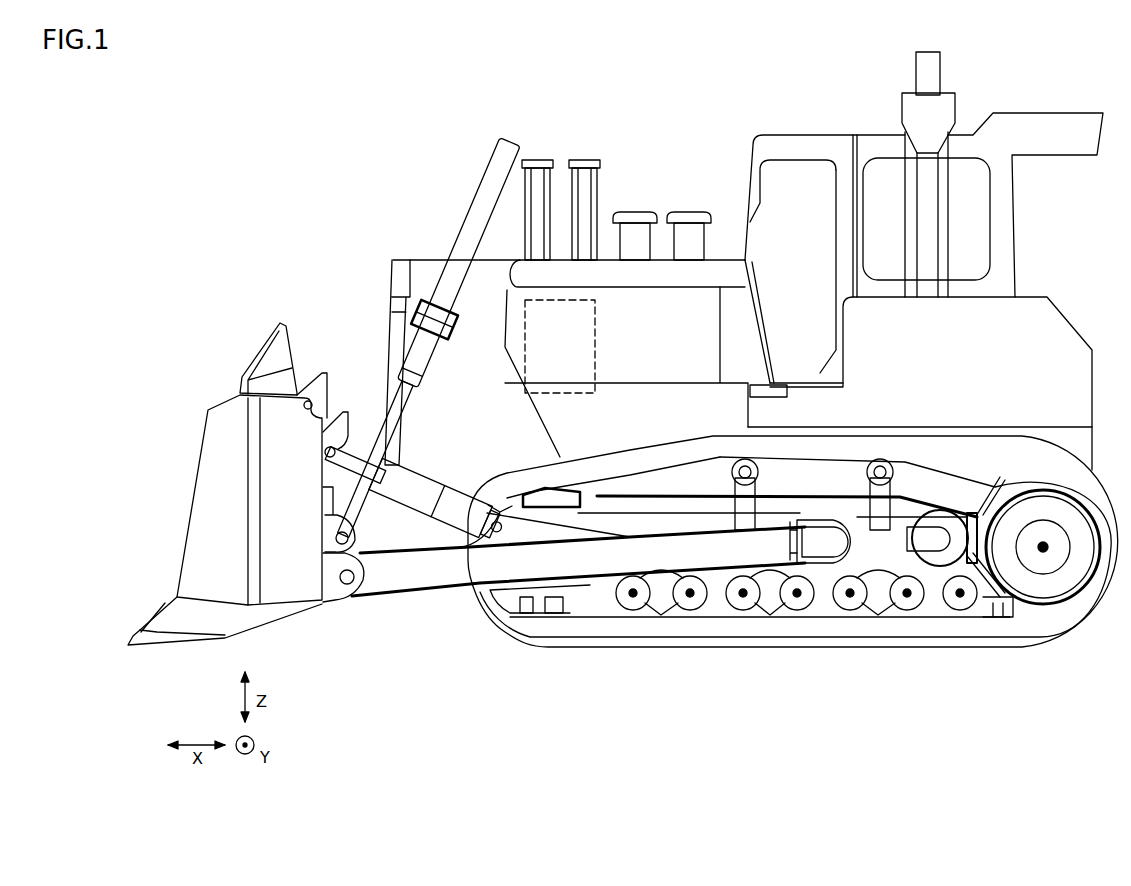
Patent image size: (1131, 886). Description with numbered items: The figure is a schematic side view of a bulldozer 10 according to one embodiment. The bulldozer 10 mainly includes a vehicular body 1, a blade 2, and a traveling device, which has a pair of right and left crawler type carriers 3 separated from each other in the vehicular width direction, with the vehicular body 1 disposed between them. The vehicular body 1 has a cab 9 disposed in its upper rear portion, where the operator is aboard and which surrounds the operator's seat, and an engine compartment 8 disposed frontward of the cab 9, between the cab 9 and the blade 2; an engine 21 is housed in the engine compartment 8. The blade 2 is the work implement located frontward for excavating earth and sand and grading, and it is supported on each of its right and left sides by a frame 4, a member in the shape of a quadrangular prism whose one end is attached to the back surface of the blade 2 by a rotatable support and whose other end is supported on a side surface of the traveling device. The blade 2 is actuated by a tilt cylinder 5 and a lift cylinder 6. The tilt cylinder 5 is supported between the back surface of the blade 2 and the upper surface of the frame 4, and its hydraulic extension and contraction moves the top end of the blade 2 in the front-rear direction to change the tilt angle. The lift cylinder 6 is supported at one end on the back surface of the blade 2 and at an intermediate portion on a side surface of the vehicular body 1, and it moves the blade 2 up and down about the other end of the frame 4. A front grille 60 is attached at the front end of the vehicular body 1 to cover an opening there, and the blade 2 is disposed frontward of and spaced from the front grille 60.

The vehicular body 1 is at (660, 307).
The blade 2 is at (218, 492).
The crawler type carrier 3 is at (816, 645).
The frame 4 is at (447, 568).
The tilt cylinder 5 is at (416, 492).
The lift cylinder 6 is at (496, 182).
The engine compartment 8 is at (602, 310).
The cab 9 is at (868, 147).
The bulldozer 10 is at (996, 86).
The engine 21 is at (553, 298).
The front grille 60 is at (383, 301).